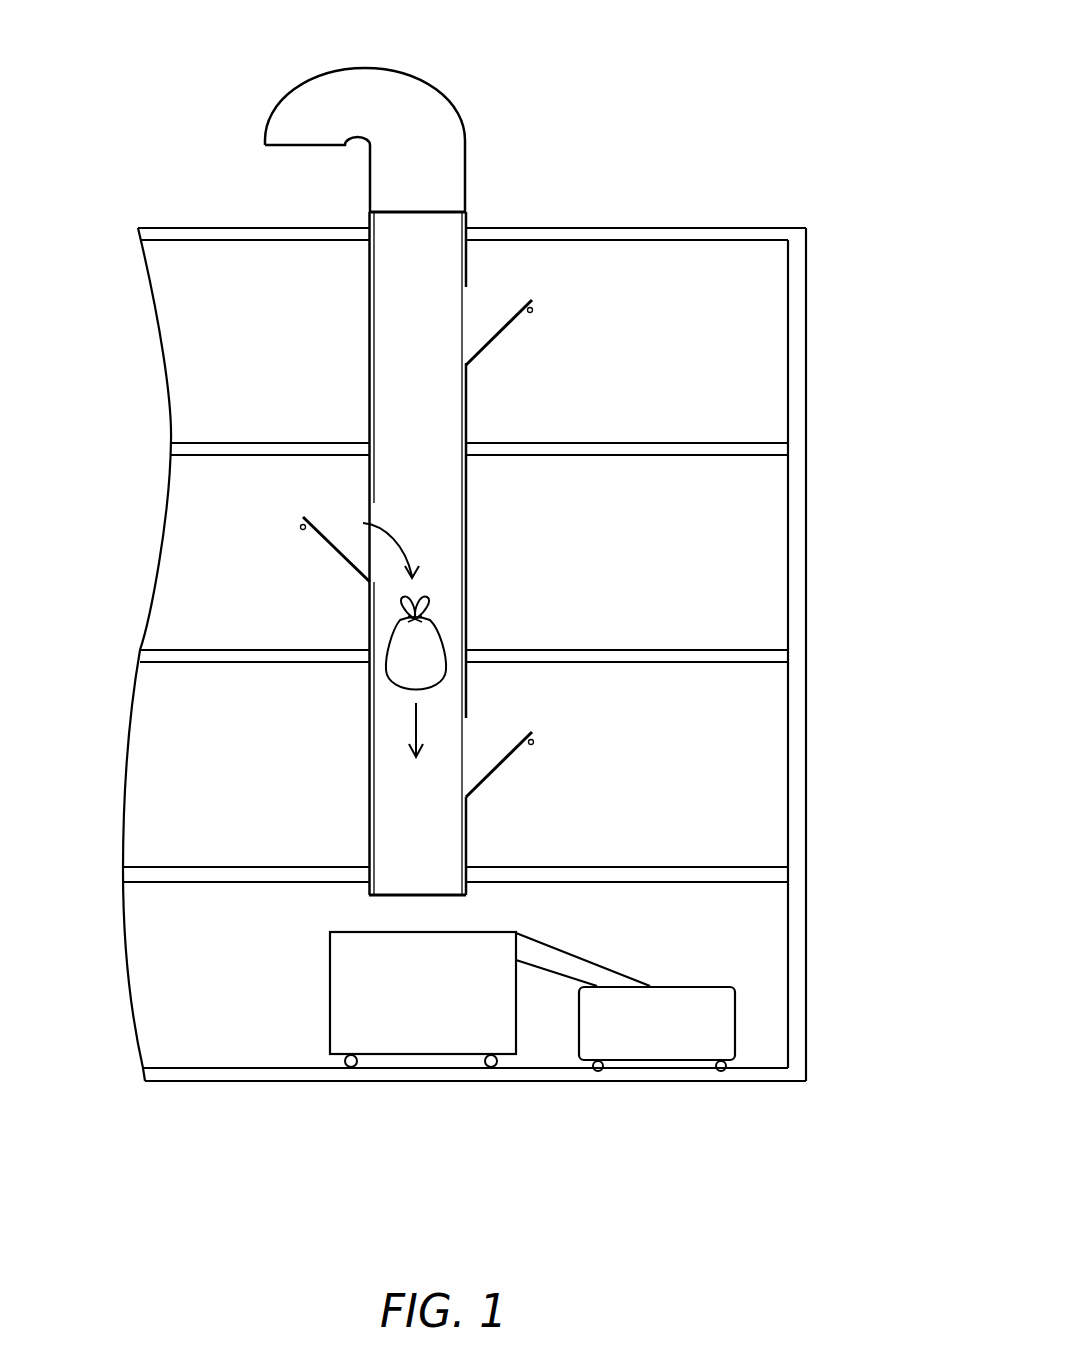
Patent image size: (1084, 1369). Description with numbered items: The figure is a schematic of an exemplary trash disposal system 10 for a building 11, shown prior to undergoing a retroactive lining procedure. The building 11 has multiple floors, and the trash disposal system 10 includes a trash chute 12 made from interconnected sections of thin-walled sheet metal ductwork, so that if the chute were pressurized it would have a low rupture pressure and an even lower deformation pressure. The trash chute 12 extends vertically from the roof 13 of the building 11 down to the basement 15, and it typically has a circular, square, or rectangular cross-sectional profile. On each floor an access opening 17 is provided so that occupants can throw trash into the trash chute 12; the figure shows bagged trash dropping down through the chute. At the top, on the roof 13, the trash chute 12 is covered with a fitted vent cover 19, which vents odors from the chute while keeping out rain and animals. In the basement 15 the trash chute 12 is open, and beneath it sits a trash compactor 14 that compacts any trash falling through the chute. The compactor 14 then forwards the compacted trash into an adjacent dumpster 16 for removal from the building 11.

The trash disposal system 10 is at (484, 150).
The building 11 is at (806, 313).
The trash chute 12 is at (405, 313).
The roof 13 is at (732, 230).
The trash compactor 14 is at (358, 985).
The basement 15 is at (765, 945).
The dumpster 16 is at (697, 998).
The access opening 17 is at (460, 318).
The vent cover 19 is at (398, 88).